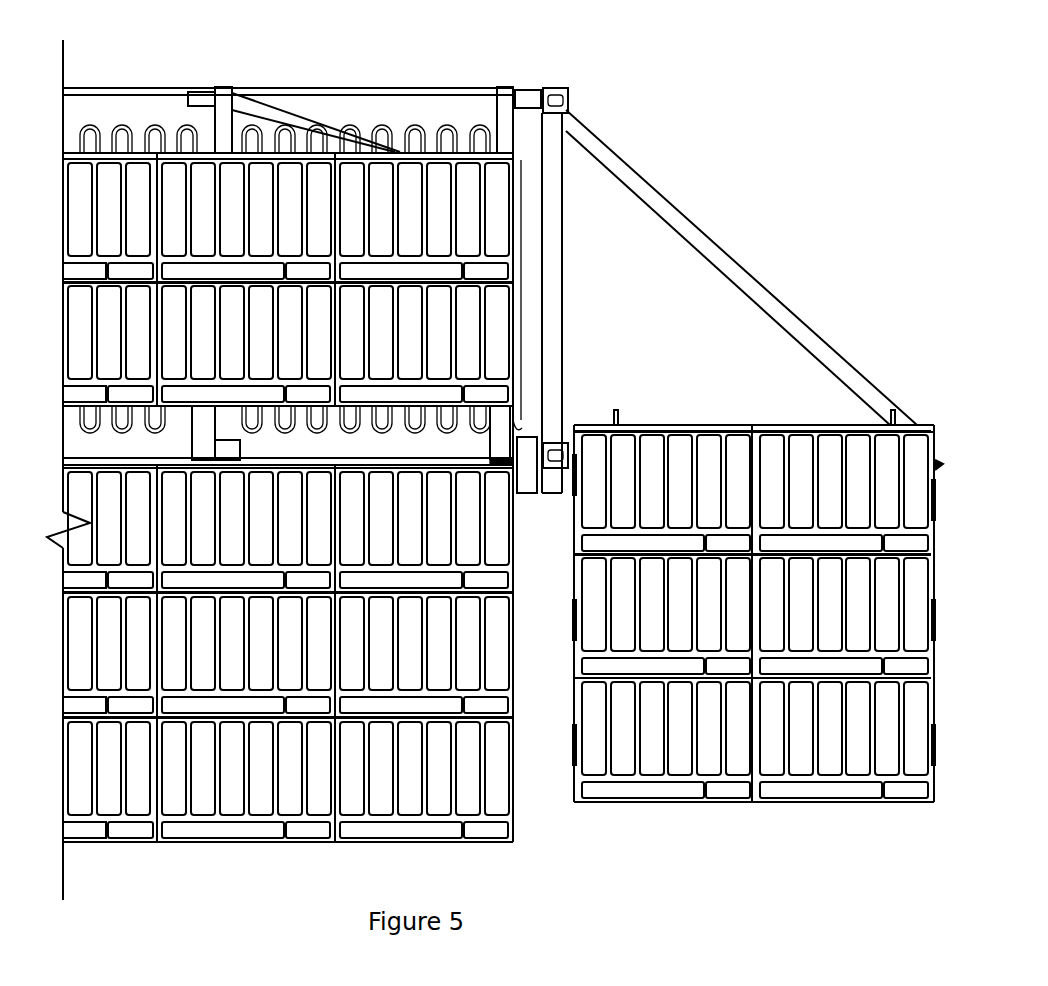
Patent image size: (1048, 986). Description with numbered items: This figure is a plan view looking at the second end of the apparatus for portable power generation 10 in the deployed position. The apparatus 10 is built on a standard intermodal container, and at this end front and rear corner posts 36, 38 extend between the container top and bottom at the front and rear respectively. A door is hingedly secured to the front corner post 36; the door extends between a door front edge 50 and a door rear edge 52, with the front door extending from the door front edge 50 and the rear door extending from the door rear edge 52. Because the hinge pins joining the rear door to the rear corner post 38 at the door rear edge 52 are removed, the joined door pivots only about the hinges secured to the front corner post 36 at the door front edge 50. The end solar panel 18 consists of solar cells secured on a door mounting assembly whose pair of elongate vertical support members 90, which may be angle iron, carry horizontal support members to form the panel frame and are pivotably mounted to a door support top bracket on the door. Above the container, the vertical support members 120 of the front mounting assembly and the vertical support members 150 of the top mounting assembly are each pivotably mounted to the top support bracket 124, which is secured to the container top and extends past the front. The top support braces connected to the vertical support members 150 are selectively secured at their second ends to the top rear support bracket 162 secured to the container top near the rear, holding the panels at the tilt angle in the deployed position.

The apparatus for portable power generation 10 is at (843, 136).
The end solar panel 18 is at (935, 522).
The front corner post 36 is at (558, 470).
The rear corner post 38 is at (553, 88).
The door front edge 50 is at (570, 420).
The door rear edge 52 is at (955, 423).
The vertical support member 90 is at (880, 425).
The vertical support member 120 is at (510, 450).
The top support bracket 124 is at (528, 440).
The vertical support member 150 is at (502, 418).
The top rear support bracket 162 is at (528, 92).